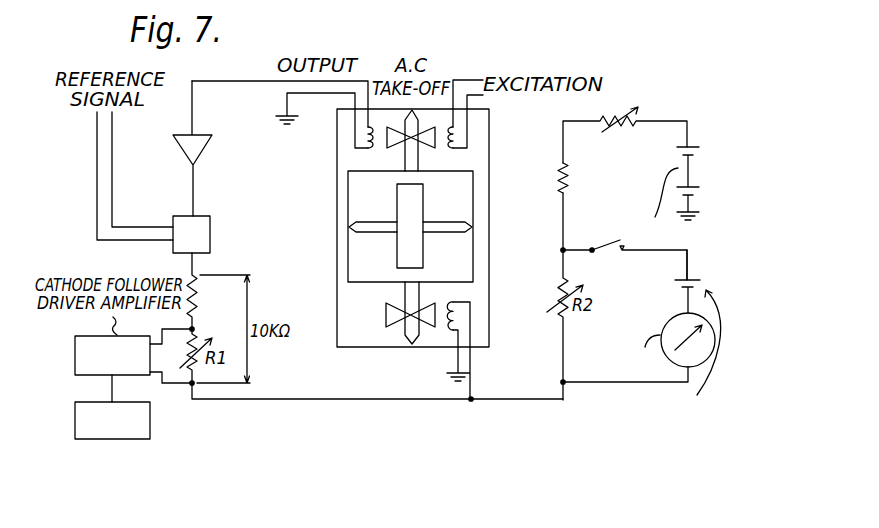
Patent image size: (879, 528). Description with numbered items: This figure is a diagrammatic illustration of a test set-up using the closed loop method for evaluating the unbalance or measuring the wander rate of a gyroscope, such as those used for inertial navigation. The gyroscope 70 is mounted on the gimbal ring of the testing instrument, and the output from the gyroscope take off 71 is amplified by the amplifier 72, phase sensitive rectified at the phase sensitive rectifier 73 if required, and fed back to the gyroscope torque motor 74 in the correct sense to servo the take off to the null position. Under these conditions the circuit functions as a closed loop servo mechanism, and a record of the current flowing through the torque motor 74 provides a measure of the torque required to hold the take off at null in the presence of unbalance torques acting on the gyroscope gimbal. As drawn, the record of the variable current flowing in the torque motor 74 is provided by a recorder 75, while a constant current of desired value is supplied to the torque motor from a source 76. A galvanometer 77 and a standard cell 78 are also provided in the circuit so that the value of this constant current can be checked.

The gyroscope 70 is at (418, 254).
The gyroscope take off 71 is at (430, 148).
The amplifier 72 is at (200, 143).
The phase sensitive rectifier 73 is at (240, 230).
The gyroscope torque motor 74 is at (375, 315).
The recorder 75 is at (111, 423).
The source 76 is at (690, 170).
The galvanometer 77 is at (668, 323).
The standard cell 78 is at (678, 285).